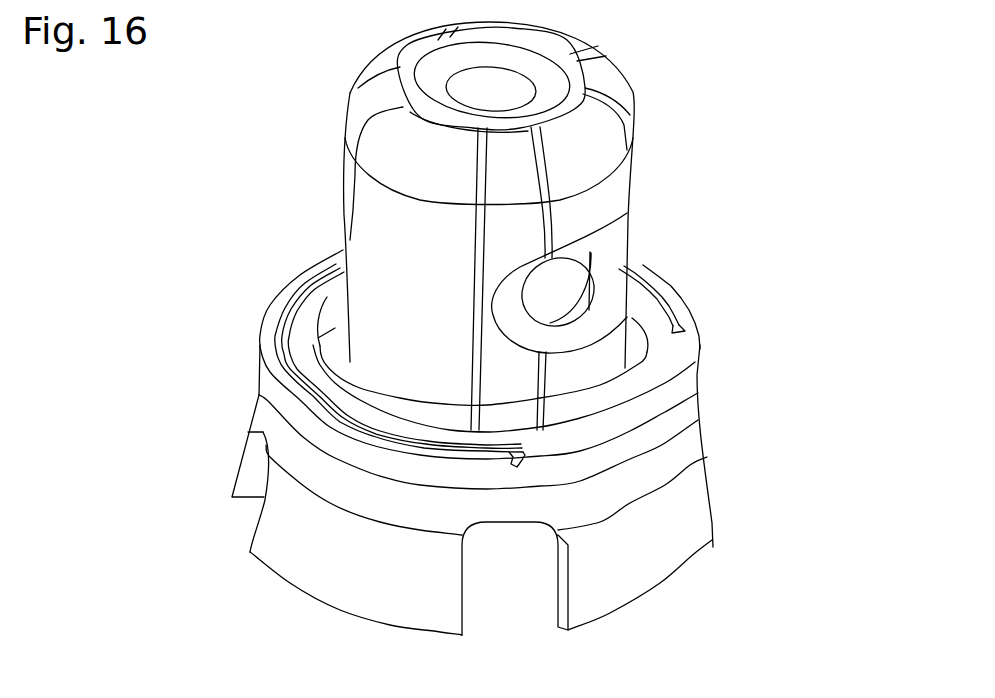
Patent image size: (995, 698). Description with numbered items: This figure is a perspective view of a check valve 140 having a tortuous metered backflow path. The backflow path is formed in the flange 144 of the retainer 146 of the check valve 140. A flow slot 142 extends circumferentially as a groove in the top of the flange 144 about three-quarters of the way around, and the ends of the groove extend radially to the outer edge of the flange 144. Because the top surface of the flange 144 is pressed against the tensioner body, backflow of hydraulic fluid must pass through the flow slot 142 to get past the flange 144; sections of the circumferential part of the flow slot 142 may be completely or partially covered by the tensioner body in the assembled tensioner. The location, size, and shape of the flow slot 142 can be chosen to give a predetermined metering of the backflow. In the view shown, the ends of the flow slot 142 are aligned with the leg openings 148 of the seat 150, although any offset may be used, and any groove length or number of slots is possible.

The check valve 140 is at (168, 203).
The flow slot 142 is at (280, 348).
The flange 144 is at (675, 358).
The retainer 146 is at (590, 80).
The leg openings 148 is at (245, 512).
The seat 150 is at (653, 462).